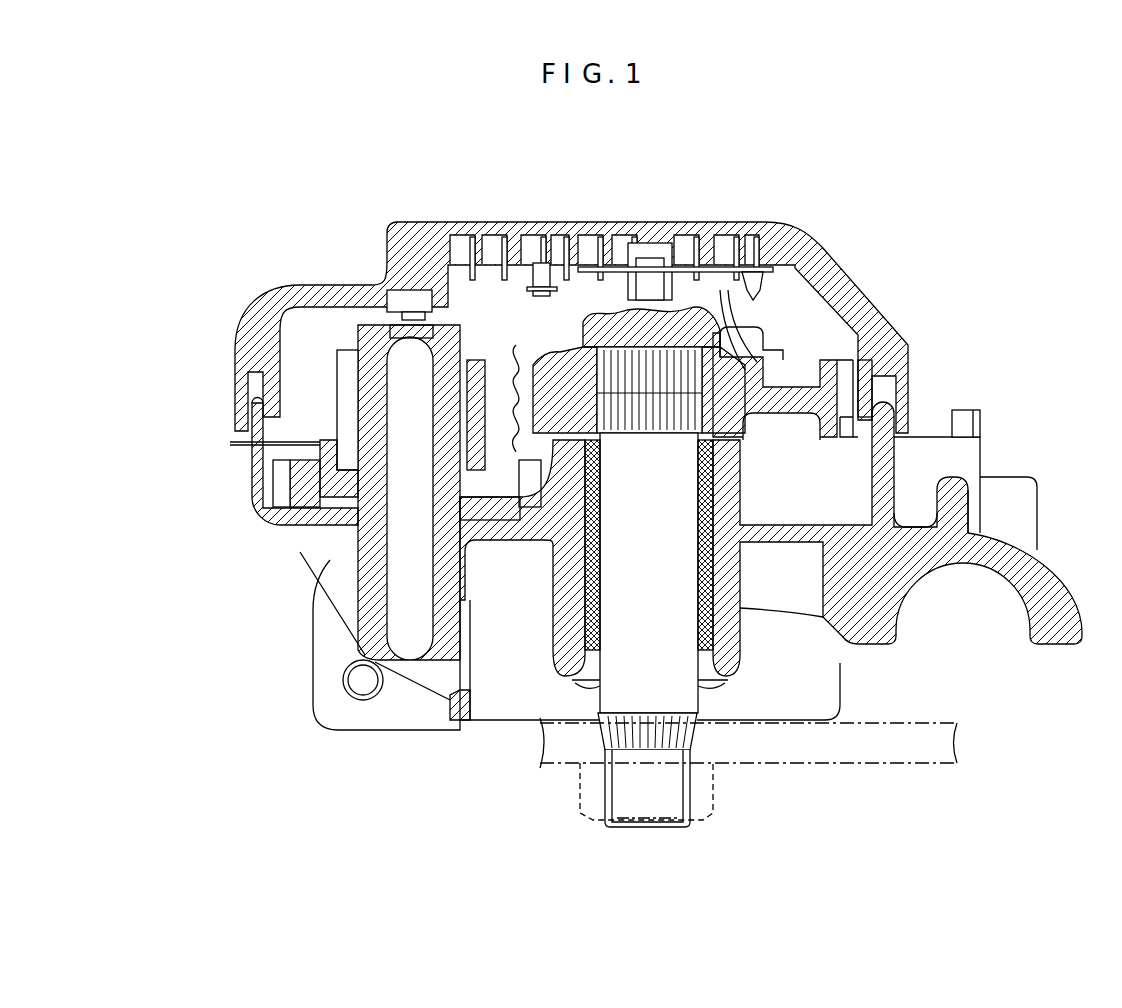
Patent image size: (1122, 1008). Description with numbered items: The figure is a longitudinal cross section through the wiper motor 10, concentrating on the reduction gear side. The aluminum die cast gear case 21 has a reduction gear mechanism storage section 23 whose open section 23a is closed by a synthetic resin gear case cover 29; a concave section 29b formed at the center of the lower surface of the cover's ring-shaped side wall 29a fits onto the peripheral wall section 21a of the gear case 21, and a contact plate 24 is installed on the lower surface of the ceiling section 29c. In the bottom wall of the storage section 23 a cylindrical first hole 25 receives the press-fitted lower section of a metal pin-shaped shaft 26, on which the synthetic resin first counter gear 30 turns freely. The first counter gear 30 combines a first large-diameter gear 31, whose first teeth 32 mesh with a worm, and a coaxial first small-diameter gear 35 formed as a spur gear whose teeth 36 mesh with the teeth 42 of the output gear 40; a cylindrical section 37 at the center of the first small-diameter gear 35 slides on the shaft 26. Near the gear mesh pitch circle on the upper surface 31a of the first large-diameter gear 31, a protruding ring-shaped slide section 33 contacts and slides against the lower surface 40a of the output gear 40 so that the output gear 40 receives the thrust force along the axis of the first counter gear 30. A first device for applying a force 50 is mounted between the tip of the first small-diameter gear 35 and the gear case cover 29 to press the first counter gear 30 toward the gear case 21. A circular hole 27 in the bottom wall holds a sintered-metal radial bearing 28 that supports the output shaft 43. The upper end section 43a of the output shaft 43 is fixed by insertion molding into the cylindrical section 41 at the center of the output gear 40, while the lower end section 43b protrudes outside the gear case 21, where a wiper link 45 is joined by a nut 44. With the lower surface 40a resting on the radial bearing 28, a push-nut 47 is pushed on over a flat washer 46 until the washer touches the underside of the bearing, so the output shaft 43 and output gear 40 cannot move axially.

The wiper motor 10 is at (1040, 183).
The gear case 21 is at (268, 542).
The peripheral wall section 21a is at (950, 418).
The reduction gear mechanism storage section 23 is at (860, 492).
The open section 23a is at (890, 420).
The contact plate 24 is at (733, 268).
The first hole 25 is at (400, 565).
The shaft 26 is at (403, 603).
The circular hole 27 is at (713, 563).
The radial bearing 28 is at (545, 585).
The gear case cover 29 is at (815, 237).
The side wall 29a is at (877, 427).
The concave section 29b is at (905, 385).
The ceiling section 29c is at (555, 222).
The first counter gear 30 is at (353, 337).
The first large-diameter gear 31 is at (285, 488).
The upper surface 31a is at (272, 480).
The first teeth 32 is at (277, 500).
The slide section 33 is at (230, 443).
The first small-diameter gear 35 is at (343, 403).
The teeth 36 is at (335, 372).
The cylindrical section 37 is at (333, 377).
The output gear 40 is at (817, 355).
The lower surface 40a is at (500, 340).
The cylindrical section 41 is at (587, 360).
The teeth 42 is at (845, 368).
The output shaft 43 is at (597, 700).
The upper end section 43a is at (660, 367).
The lower end section 43b is at (647, 735).
The nut 44 is at (580, 783).
The wiper link 45 is at (908, 766).
The flat washer 46 is at (730, 678).
The push-nut 47 is at (710, 690).
The first device for applying a force 50 is at (405, 285).